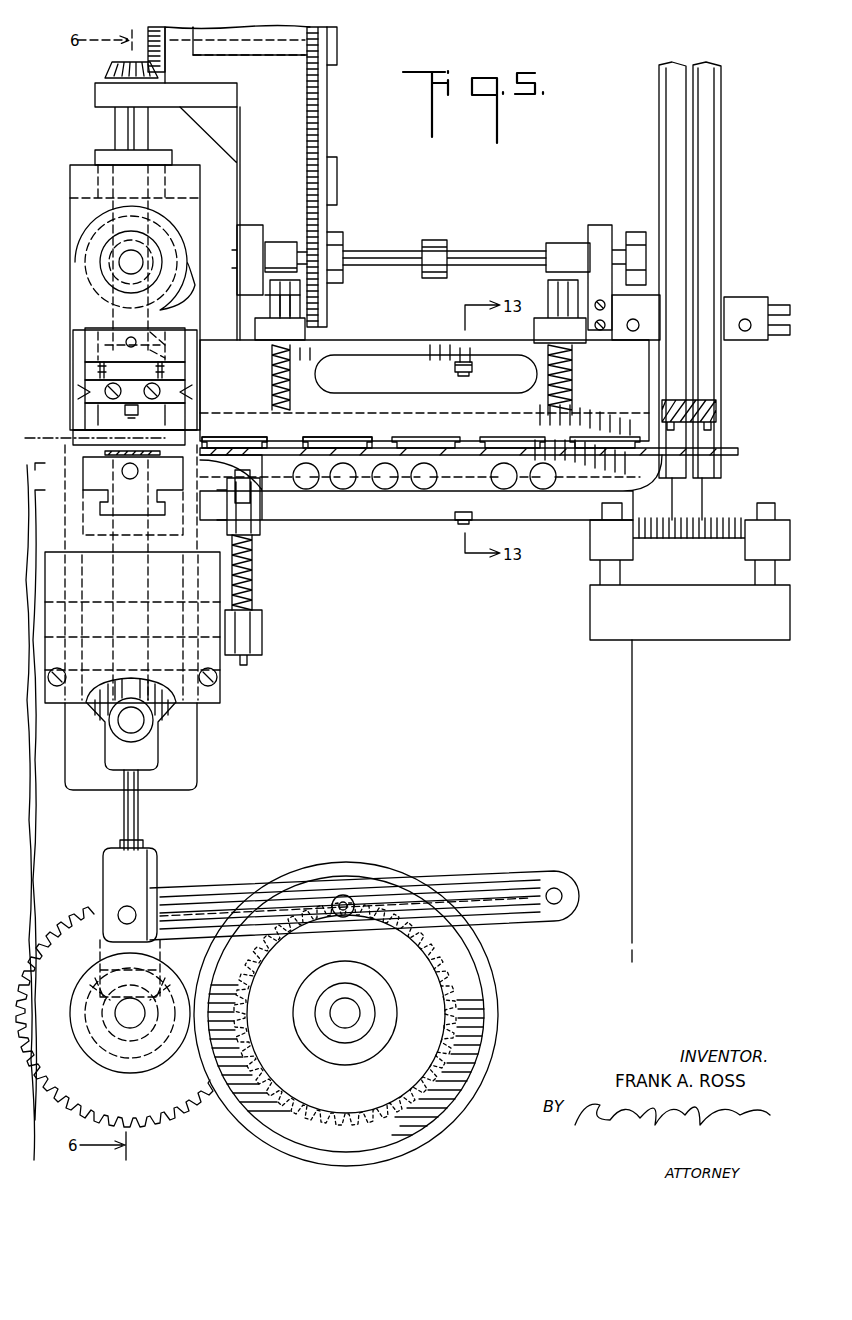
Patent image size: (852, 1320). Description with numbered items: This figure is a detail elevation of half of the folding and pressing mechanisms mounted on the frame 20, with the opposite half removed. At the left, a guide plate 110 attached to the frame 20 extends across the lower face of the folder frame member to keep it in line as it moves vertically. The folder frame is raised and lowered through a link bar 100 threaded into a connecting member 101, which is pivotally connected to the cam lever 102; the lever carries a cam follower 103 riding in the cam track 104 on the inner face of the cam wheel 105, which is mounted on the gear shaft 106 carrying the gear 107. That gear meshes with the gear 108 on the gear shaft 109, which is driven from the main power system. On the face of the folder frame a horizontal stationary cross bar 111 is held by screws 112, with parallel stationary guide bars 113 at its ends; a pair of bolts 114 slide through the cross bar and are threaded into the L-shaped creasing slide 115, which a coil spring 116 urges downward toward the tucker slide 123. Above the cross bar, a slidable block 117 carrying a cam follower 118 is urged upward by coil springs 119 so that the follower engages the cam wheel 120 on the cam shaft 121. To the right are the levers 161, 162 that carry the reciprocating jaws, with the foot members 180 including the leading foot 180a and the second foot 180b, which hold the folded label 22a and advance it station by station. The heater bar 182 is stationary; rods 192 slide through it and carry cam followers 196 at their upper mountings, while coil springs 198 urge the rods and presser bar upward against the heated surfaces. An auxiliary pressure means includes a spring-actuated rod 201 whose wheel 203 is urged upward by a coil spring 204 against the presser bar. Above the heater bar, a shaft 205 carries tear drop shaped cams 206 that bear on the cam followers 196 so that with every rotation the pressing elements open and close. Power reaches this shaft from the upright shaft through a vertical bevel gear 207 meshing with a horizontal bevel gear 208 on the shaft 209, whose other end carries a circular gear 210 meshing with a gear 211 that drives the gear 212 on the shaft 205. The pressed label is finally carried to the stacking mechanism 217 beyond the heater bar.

The frame 20 is at (404, 698).
The folded label 22a is at (112, 474).
The link bar 100 is at (140, 815).
The connecting member 101 is at (155, 868).
The cam lever 102 is at (225, 885).
The cam follower 103 is at (337, 893).
The cam track 104 is at (468, 958).
The cam wheel 105 is at (495, 1030).
The gear shaft 106 is at (350, 1020).
The gear 107 is at (465, 982).
The gear 108 is at (170, 1100).
The gear shaft 109 is at (133, 1020).
The guide plate 110 is at (212, 658).
The cross bar 111 is at (85, 384).
The screws 112 is at (185, 392).
The guide bars 113 is at (185, 370).
The bolts 114 is at (185, 328).
The creasing slide 115 is at (90, 448).
The coil spring 116 is at (135, 419).
The slidable block 117 is at (175, 340).
The cam follower 118 is at (150, 337).
The coil springs 119 is at (98, 370).
The cam wheel 120 is at (78, 242).
The cam shaft 121 is at (118, 265).
The tucker slide 123 is at (170, 475).
The lever 161 is at (460, 362).
The lever 162 is at (460, 524).
The foot members 180 is at (435, 440).
The leading foot 180a is at (270, 425).
The second foot 180b is at (358, 425).
The heater bar 182 is at (630, 400).
The rods 192 is at (290, 372).
The cam follower 196 is at (305, 298).
The coil springs 198 is at (295, 355).
The spring-actuated rod 201 is at (250, 590).
The wheel 203 is at (248, 500).
The coil springs 204 is at (250, 565).
The shaft 205 is at (390, 257).
The tear drop shaped cams 206 is at (287, 215).
The bevel gear 207 is at (108, 66).
The bevel gear 208 is at (148, 30).
The shaft 209 is at (275, 57).
The circular gear 210 is at (330, 85).
The gear 211 is at (322, 128).
The gear 212 is at (330, 215).
The stacking mechanism 217 is at (715, 262).